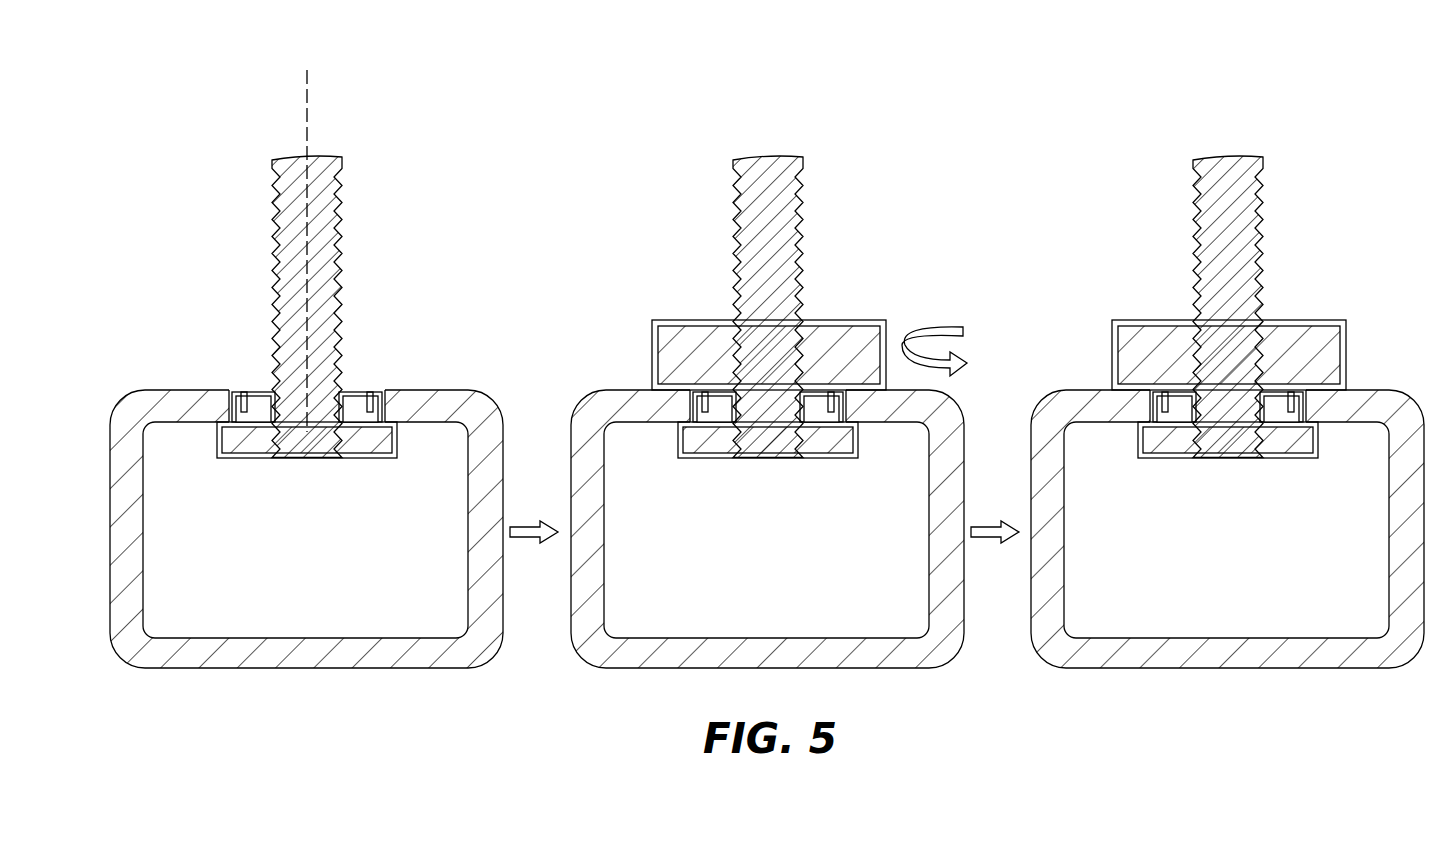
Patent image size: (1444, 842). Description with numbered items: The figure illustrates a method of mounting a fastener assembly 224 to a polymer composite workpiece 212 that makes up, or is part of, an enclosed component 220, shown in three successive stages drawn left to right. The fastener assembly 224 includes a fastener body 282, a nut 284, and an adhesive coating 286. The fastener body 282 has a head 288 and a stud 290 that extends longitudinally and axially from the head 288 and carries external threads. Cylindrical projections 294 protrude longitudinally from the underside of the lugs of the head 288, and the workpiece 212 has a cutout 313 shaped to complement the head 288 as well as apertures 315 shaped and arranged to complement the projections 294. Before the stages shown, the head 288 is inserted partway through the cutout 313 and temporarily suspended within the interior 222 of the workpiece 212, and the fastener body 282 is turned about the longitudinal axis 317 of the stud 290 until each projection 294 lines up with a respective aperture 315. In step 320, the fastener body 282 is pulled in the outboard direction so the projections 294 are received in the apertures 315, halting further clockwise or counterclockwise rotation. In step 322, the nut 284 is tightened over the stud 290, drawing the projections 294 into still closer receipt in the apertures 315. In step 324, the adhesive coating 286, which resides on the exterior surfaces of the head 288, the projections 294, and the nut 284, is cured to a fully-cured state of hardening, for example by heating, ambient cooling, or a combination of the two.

The polymer composite workpiece 212 is at (132, 558).
The enclosed component 220 is at (767, 567).
The interior 222 is at (305, 530).
The fastener assembly 224 is at (822, 164).
The fastener body 282 is at (341, 247).
The nut 284 is at (838, 352).
The adhesive coating 286 is at (285, 460).
The head 288 is at (365, 442).
The stud 290 is at (318, 214).
The projection 294 is at (243, 398).
The cutout 313 is at (312, 398).
The aperture 315 is at (238, 410).
The longitudinal axis 317 is at (309, 98).
The step 320 is at (224, 180).
The step 322 is at (686, 198).
The step 324 is at (1156, 210).